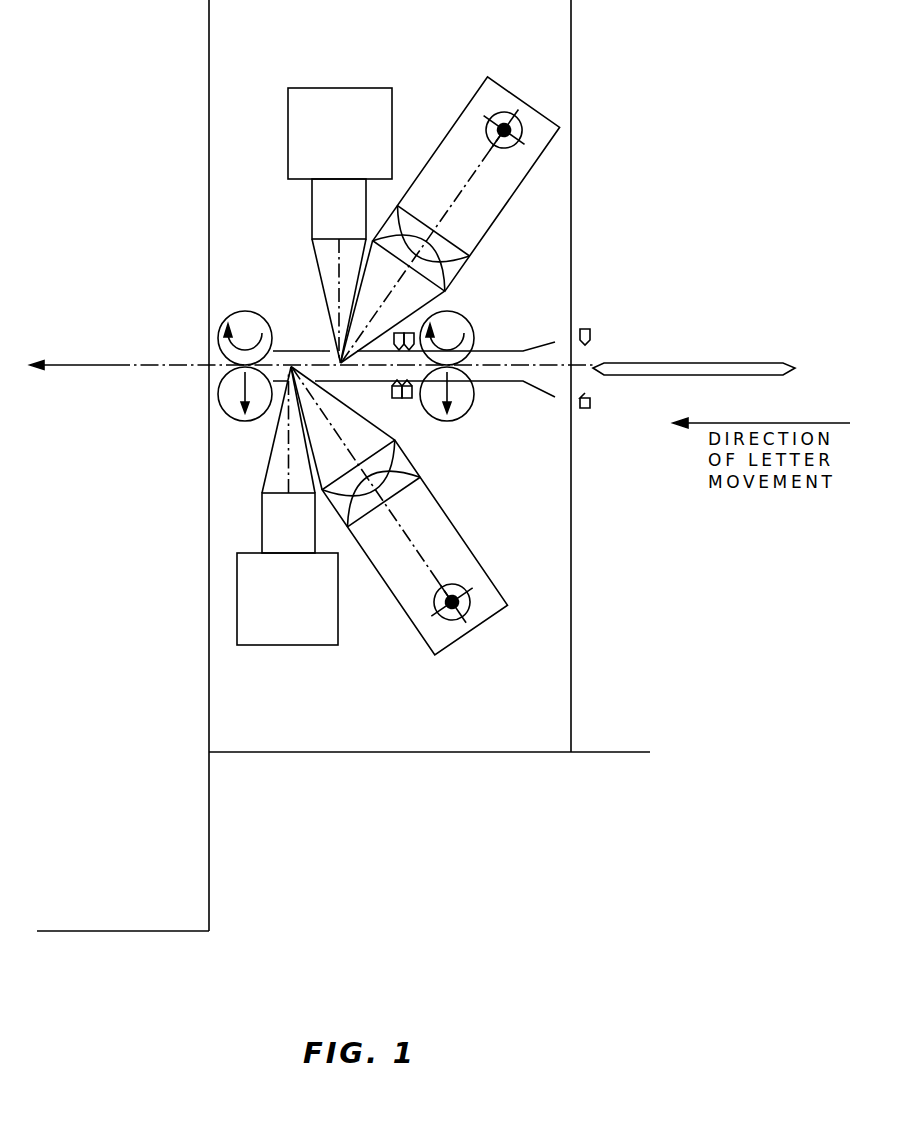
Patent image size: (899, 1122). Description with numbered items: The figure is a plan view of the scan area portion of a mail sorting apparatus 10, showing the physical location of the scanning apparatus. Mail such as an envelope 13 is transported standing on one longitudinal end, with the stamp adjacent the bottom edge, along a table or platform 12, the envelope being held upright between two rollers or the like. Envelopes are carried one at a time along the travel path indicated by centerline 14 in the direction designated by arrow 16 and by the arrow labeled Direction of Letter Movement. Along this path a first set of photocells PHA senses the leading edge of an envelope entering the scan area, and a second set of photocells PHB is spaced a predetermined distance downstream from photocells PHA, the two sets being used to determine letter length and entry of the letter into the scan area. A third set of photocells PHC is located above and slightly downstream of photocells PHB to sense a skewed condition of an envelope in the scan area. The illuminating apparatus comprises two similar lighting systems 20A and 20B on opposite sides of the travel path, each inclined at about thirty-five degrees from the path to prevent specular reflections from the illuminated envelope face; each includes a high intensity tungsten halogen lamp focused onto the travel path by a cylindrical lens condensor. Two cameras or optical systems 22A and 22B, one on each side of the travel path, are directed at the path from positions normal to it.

The mail sorting apparatus 10 is at (487, 816).
The table or platform 12 is at (514, 728).
The envelope 13 is at (727, 362).
The centerline 14 is at (480, 353).
The arrow 16 is at (97, 362).
The lighting system 20A is at (440, 498).
The lighting system 20B is at (470, 216).
The camera or optical system 22A is at (255, 641).
The camera or optical system 22B is at (333, 105).
The first set of photocells PHA is at (591, 396).
The second set of photocells PHB is at (405, 333).
The third set of photocells PHC is at (397, 400).